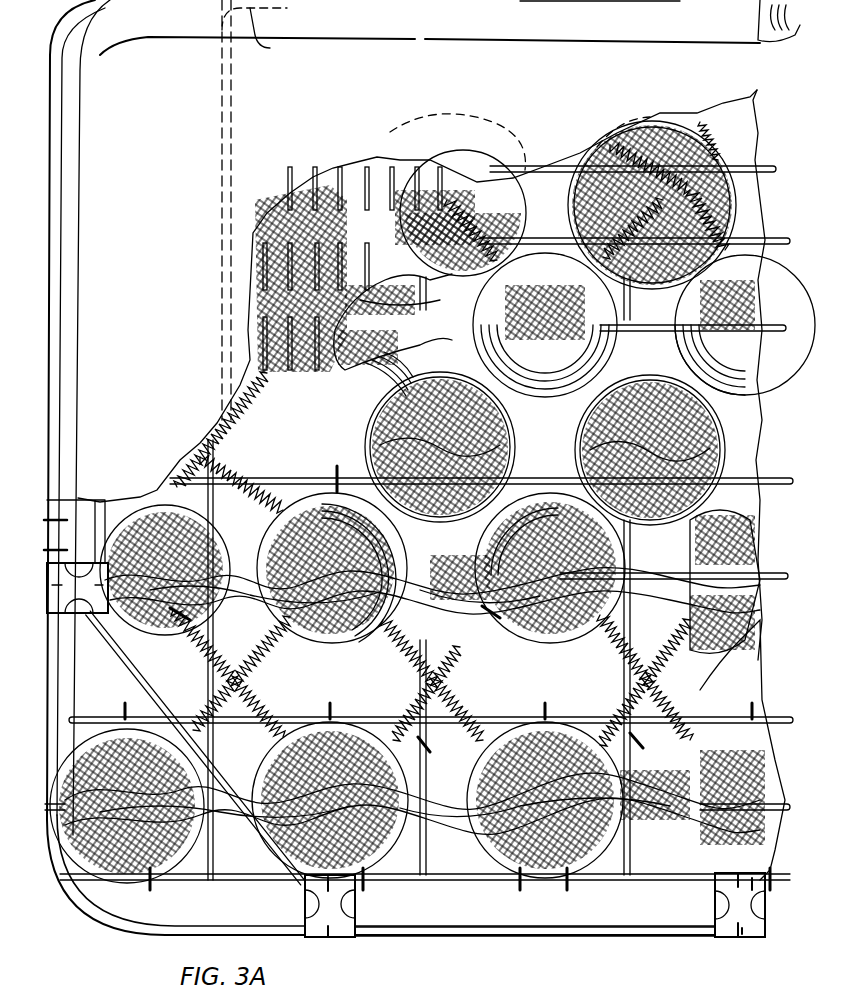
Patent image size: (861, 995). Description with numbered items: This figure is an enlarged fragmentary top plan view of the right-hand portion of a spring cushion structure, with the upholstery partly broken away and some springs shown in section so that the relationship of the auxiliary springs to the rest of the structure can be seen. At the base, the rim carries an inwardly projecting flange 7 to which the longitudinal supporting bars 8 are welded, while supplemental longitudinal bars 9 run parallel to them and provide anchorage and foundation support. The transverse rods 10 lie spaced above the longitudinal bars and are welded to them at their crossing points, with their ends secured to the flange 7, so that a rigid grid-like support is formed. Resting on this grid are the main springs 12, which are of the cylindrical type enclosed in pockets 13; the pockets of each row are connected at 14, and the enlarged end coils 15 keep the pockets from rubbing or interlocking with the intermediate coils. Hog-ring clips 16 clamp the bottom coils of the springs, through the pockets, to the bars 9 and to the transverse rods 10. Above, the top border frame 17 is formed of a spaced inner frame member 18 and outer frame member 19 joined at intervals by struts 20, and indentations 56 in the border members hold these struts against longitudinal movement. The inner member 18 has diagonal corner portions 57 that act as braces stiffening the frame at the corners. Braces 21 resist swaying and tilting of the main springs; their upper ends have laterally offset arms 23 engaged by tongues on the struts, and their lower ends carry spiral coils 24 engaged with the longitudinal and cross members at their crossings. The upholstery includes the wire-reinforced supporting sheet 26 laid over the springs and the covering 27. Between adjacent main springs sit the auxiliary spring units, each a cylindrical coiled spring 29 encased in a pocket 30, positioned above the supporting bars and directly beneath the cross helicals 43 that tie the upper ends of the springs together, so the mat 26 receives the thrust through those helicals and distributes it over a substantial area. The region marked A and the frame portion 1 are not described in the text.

The frame 1 is at (50, 320).
The inwardly projecting flange 7 is at (440, 855).
The longitudinal supporting bars 8 is at (765, 580).
The supplemental longitudinal bars 9 is at (775, 242).
The transverse rods 10 is at (428, 748).
The springs 12 is at (763, 347).
The pockets 13 is at (748, 275).
The pocket connections 14 is at (408, 556).
The end coils 15 is at (765, 375).
The clips 16 is at (555, 718).
The top border frame 17 is at (37, 720).
The inner frame member 18 is at (415, 882).
The outer frame member 19 is at (37, 673).
The struts 20 is at (48, 614).
The braces 21 is at (222, 207).
The laterally offset arms 23 is at (260, 36).
The spiral coils 24 is at (425, 695).
The supporting sheet 26 is at (330, 185).
The covering 27 is at (760, 103).
The cylindrical coiled spring 29 is at (360, 438).
The pocket 30 is at (362, 416).
The cross helicals 43 is at (708, 128).
The indentations 56 is at (305, 925).
The diagonal corner portions 57 is at (226, 780).
The region A is at (82, 703).